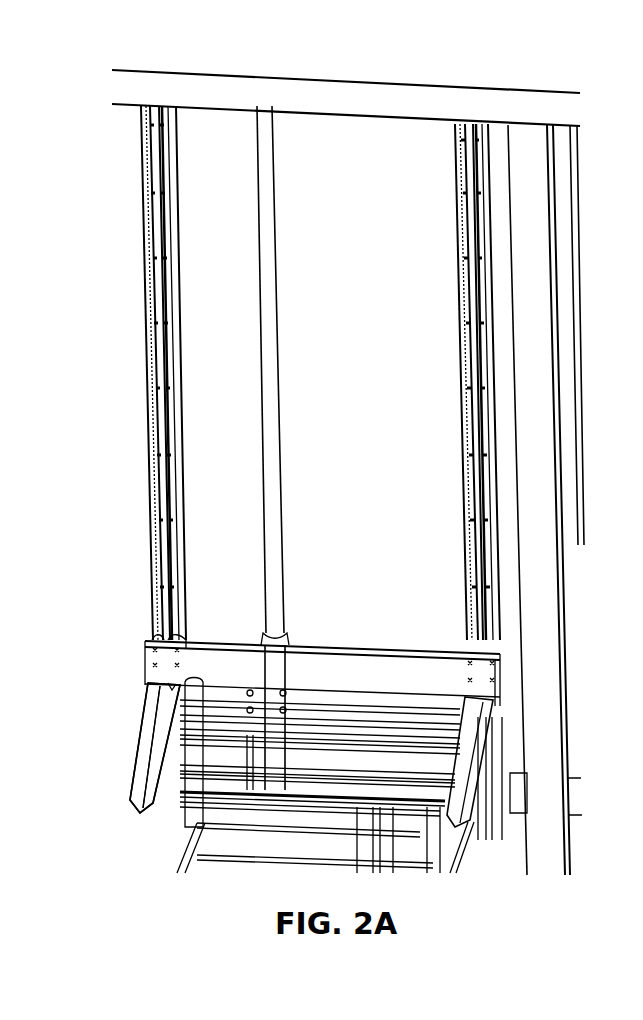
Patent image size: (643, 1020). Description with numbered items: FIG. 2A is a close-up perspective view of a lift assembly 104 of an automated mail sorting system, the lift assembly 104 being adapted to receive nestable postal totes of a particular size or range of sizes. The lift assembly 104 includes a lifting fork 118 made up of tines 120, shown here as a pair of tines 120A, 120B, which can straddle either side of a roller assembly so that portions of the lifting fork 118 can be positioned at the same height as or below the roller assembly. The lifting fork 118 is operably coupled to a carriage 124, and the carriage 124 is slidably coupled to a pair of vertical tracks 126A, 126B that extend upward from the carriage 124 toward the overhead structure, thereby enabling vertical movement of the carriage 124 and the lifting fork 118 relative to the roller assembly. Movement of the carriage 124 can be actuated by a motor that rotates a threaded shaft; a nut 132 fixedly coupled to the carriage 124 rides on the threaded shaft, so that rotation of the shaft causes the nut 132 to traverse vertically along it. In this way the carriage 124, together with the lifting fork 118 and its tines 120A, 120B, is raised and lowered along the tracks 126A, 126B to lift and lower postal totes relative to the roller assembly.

The lift assembly 104 is at (458, 62).
The lifting fork 118 is at (327, 737).
The tine 120 is at (150, 773).
The first tine 120A is at (148, 685).
The second tine 120B is at (493, 702).
The carriage 124 is at (385, 682).
The first track 126A is at (163, 428).
The second track 126B is at (462, 426).
The nut 132 is at (272, 296).